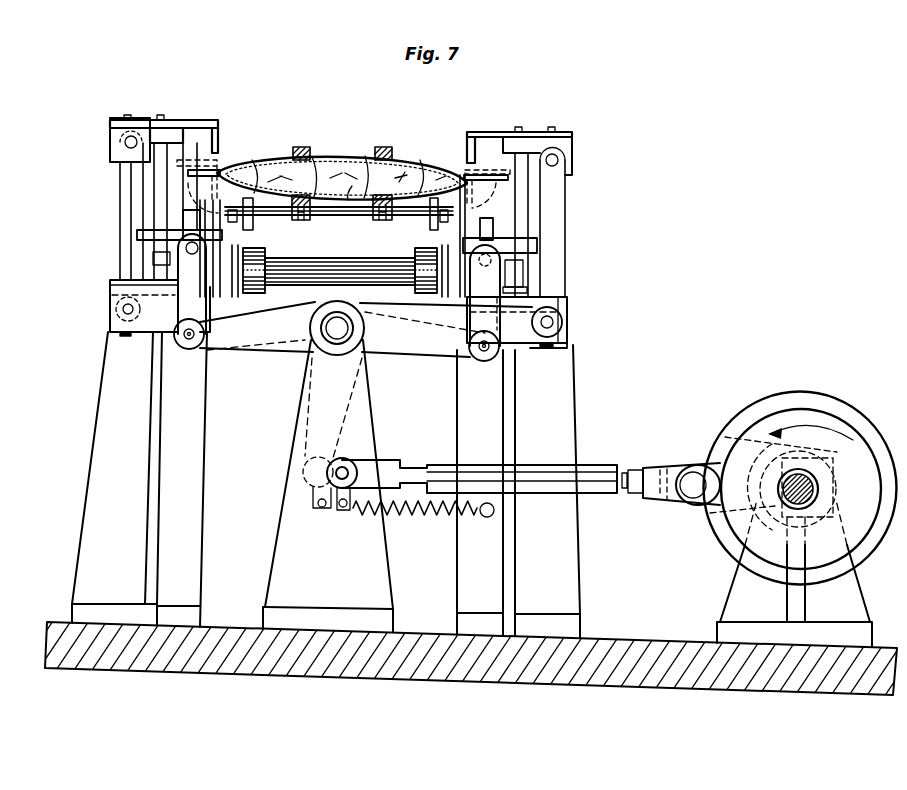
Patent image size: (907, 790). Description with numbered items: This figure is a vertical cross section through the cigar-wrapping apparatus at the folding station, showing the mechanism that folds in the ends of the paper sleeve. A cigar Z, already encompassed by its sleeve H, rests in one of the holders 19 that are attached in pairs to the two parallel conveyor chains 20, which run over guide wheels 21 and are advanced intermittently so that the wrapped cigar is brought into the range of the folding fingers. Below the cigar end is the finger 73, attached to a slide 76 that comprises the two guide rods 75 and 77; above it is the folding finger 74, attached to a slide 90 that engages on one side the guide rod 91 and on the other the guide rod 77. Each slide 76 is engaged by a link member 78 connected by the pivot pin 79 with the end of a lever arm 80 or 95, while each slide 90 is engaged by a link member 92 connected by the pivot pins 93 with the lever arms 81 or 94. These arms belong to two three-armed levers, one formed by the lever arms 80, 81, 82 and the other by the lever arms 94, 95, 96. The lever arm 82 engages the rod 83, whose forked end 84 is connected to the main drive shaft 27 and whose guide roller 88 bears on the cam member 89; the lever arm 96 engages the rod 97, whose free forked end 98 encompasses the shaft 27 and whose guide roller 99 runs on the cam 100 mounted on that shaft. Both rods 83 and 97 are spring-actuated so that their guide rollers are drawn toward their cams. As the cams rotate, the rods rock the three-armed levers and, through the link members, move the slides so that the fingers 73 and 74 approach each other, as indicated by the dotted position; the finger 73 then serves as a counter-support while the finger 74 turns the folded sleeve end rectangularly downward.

The holders 19 is at (301, 147).
The conveyor chains 20 is at (250, 212).
The guide wheels 21 is at (230, 236).
The main drive shaft 27 is at (770, 515).
The folding finger 73 is at (200, 200).
The folding finger 74 is at (220, 143).
The guide rod 75 is at (187, 215).
The slide 76 is at (150, 235).
The guide rod 77 is at (160, 258).
The link member 78 is at (190, 267).
The pivot pin 79 is at (185, 349).
The lever arm 80 is at (396, 347).
The lever arm 81 is at (260, 350).
The lever arm 82 is at (308, 400).
The rod 83 is at (310, 460).
The forked end 84 is at (790, 496).
The guide roller 88 is at (662, 467).
The cam member 89 is at (703, 465).
The slide 90 is at (112, 127).
The guide rod 91 is at (130, 175).
The link member 92 is at (123, 200).
The pivot pin 93 is at (124, 308).
The lever arm 94 is at (437, 347).
The lever arm 95 is at (228, 312).
The lever arm 96 is at (330, 416).
The rod 97 is at (367, 472).
The forked end 98 is at (753, 497).
The guide roller 99 is at (697, 467).
The cam 100 is at (755, 408).
The cigar Z is at (325, 168).
The sleeve H is at (350, 200).